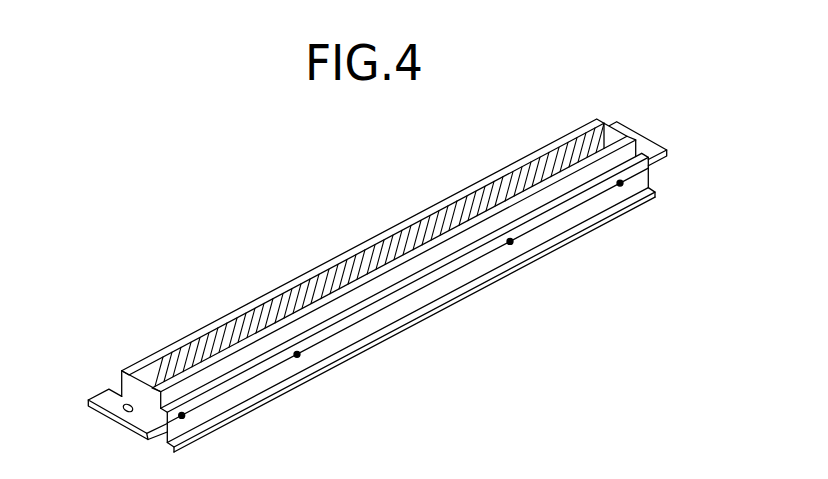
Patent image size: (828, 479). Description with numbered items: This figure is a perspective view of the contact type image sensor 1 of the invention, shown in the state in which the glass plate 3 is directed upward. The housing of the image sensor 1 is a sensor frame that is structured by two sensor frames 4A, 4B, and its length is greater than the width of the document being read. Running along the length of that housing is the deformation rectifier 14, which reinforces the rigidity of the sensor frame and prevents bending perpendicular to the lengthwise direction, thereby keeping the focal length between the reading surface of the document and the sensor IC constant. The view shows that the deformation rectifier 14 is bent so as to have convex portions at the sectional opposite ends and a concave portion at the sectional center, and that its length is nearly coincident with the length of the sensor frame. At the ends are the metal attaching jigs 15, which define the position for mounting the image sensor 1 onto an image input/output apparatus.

The image sensor 1 is at (205, 306).
The glass plate 3 is at (398, 243).
The sensor frame 4A is at (587, 127).
The sensor frame 4B is at (630, 130).
The deformation rectifier 14 is at (540, 249).
The attaching jig 15 is at (142, 421).